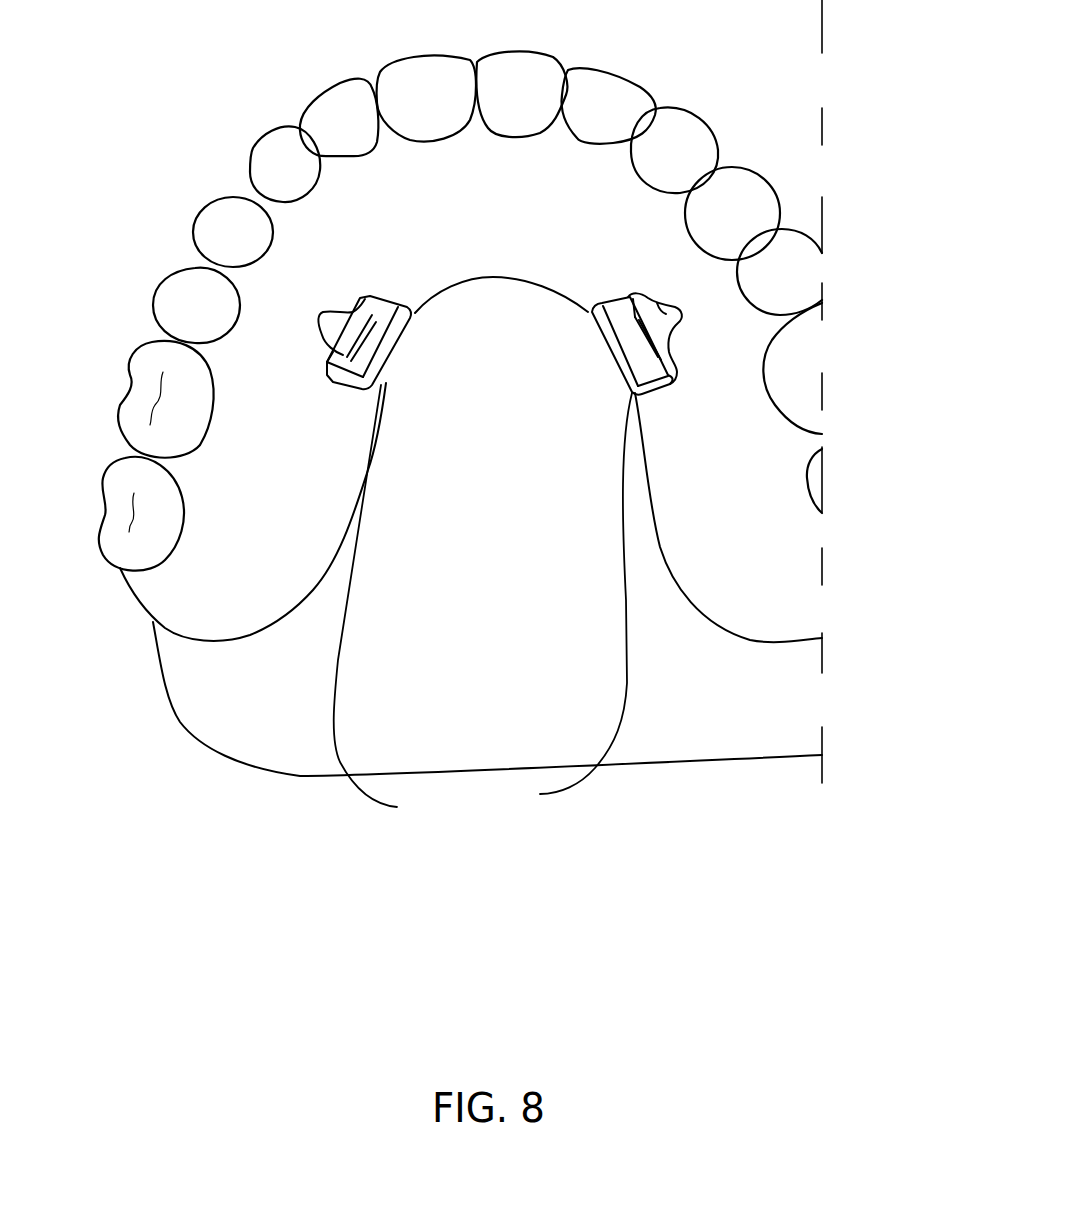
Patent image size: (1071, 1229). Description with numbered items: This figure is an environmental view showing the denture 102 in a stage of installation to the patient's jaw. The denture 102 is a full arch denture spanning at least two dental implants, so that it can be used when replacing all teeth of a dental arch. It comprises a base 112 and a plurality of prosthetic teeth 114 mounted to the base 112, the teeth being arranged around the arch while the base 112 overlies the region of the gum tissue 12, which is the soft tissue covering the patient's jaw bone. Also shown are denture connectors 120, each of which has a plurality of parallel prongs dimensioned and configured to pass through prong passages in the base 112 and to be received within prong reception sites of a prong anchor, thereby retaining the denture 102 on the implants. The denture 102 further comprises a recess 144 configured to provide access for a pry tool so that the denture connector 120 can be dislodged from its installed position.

The gum tissue 12 is at (815, 703).
The denture 102 is at (820, 579).
The base 112 is at (535, 208).
The prosthetic tooth 114 is at (340, 107).
The denture connector 120 is at (483, 602).
The recess 144 is at (340, 328).